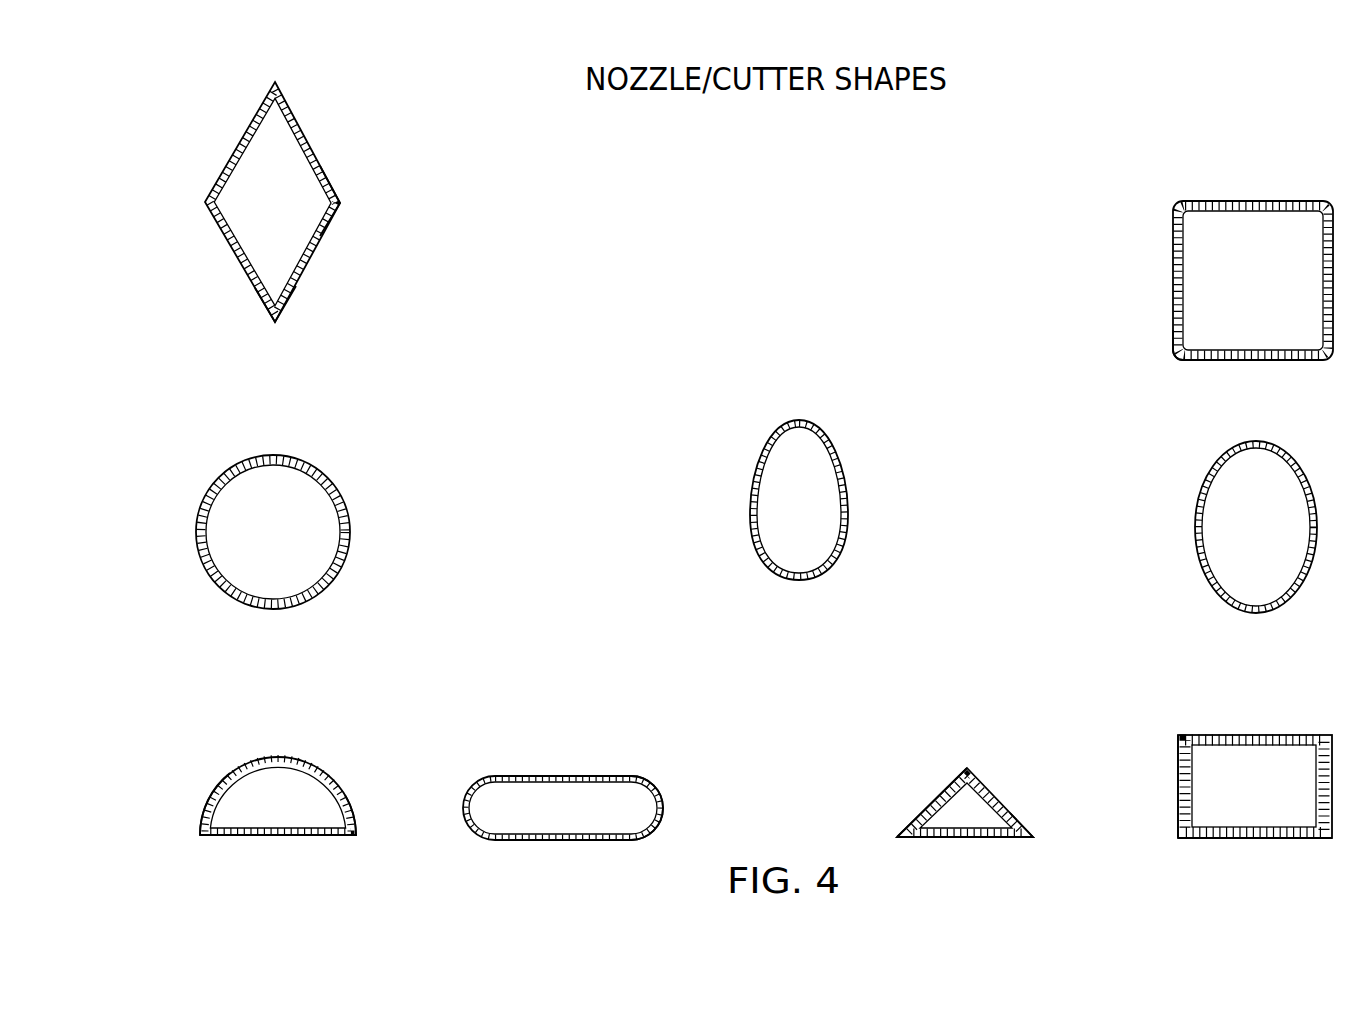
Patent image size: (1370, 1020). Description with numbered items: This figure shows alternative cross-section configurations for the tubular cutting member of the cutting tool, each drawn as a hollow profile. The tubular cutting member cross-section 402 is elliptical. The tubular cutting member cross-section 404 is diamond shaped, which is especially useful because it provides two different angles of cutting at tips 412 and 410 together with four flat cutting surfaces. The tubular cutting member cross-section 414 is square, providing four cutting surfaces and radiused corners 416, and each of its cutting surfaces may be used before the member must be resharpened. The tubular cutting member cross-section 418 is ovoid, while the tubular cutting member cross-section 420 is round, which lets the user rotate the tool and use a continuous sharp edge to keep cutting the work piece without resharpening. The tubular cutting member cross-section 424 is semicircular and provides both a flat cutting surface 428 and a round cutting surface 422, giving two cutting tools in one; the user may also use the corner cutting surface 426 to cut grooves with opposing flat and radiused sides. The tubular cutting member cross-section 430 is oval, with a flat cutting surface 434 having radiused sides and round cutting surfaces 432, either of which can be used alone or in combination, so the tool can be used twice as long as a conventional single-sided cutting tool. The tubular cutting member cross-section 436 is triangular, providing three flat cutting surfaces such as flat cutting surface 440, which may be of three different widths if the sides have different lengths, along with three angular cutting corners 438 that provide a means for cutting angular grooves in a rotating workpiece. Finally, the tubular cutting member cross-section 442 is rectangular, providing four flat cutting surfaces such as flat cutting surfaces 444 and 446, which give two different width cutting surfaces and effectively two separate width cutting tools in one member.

The tubular cutting member cross-section 402 is at (1256, 505).
The tubular cutting member cross-section 404 is at (322, 168).
The tip 410 is at (275, 322).
The tip 412 is at (340, 203).
The tubular cutting member cross-section 414 is at (1194, 249).
The radiused corners 416 is at (1173, 352).
The tubular cutting member cross-section 418 is at (799, 474).
The tubular cutting member cross-section 420 is at (273, 505).
The round cutting surface 422 is at (210, 801).
The tubular cutting member cross-section 424 is at (266, 798).
The corner cutting surface 426 is at (350, 836).
The flat cutting surface 428 is at (265, 834).
The tubular cutting member cross-section 430 is at (610, 800).
The round cutting surface 432 is at (663, 805).
The flat cutting surface 434 is at (553, 838).
The tubular cutting member cross-section 436 is at (962, 798).
The angular cutting corners 438 is at (1033, 837).
The flat cutting surface 440 is at (925, 810).
The tubular cutting member cross-section 442 is at (1206, 783).
The flat cutting surface 444 is at (1178, 762).
The flat cutting surface 446 is at (1250, 838).